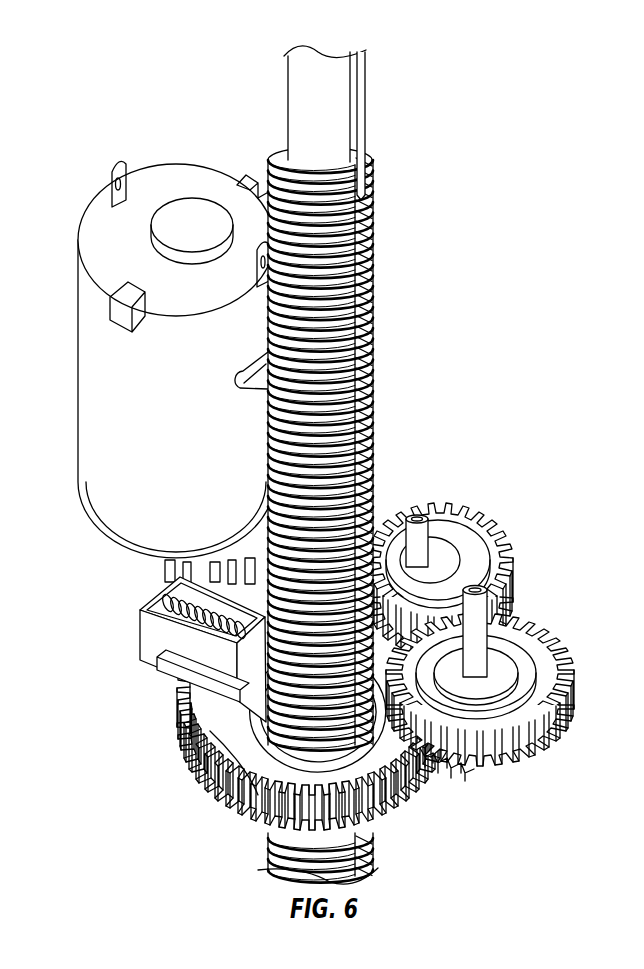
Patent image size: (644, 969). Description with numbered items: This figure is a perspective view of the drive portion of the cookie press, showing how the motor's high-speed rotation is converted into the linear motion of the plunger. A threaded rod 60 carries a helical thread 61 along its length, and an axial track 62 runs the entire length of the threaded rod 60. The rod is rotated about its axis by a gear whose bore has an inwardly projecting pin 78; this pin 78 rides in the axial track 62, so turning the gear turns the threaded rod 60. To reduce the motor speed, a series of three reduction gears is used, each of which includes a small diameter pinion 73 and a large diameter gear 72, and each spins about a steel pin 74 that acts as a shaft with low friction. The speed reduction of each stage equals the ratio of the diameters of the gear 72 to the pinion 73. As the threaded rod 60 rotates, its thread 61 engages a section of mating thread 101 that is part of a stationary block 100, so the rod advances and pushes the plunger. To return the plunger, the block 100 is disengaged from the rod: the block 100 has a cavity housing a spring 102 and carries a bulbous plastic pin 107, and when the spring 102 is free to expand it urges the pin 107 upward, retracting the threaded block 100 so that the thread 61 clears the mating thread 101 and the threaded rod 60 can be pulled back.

The threaded rod 60 is at (356, 465).
The helical thread 61 is at (327, 291).
The axial track 62 is at (366, 170).
The large diameter gear 72 is at (500, 636).
The small diameter pinion 73 is at (474, 769).
The steel pin 74 is at (471, 643).
The inwardly projecting pin 78 is at (295, 755).
The block 100 is at (252, 705).
The mating thread 101 is at (258, 795).
The spring 102 is at (163, 603).
The plastic pin 107 is at (167, 642).